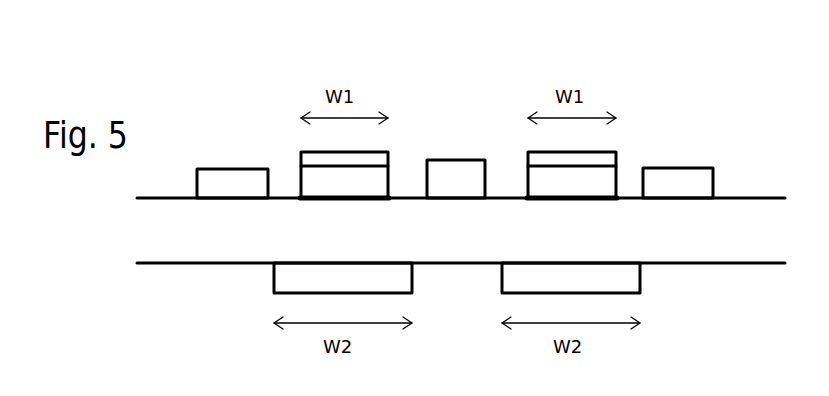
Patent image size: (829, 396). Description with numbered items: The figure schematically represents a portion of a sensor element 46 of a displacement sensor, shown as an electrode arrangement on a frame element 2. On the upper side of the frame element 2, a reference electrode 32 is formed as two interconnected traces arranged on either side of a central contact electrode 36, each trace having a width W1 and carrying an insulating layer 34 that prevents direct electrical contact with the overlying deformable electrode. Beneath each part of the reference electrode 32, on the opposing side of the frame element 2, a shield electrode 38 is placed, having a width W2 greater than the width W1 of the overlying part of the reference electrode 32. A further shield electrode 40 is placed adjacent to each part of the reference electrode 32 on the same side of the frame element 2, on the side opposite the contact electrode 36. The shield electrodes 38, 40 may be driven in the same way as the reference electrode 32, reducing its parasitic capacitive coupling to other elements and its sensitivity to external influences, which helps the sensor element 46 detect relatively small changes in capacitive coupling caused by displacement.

The frame element 2 is at (750, 252).
The reference electrode 32 is at (315, 187).
The insulating layer 34 is at (350, 160).
The contact electrode 36 is at (438, 182).
The shield electrode 38 is at (285, 277).
The shield electrode 40 is at (213, 186).
The sensor element 46 is at (160, 103).